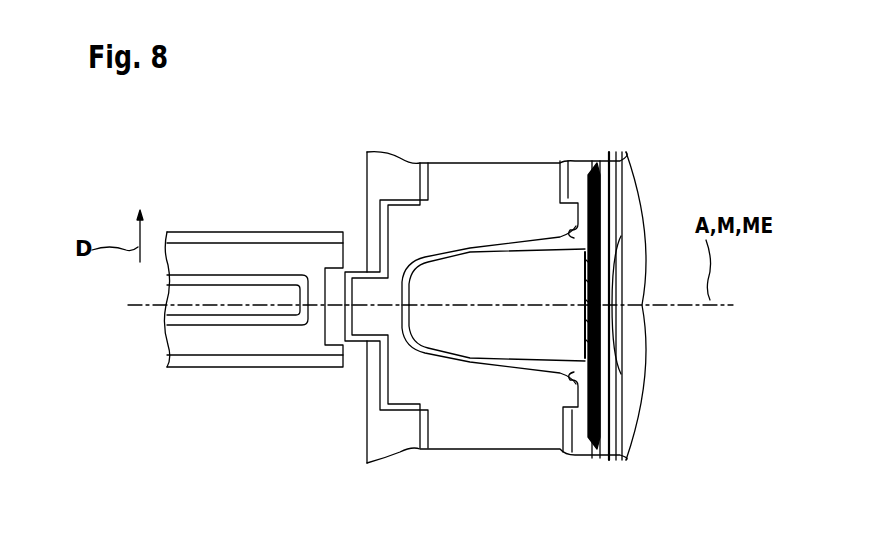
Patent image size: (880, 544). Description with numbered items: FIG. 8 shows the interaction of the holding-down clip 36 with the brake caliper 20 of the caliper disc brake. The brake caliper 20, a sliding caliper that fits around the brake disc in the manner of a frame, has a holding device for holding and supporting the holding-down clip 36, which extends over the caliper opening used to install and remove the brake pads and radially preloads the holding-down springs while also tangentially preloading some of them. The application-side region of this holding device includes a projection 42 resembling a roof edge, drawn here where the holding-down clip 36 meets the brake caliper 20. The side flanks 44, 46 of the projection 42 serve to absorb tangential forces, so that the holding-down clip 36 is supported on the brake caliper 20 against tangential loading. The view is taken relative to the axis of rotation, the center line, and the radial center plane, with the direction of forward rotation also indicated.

The brake caliper 20 is at (472, 176).
The holding-down clip 36 is at (145, 331).
The projection 42 is at (370, 322).
The side flank 44 is at (355, 268).
The side flank 46 is at (350, 347).